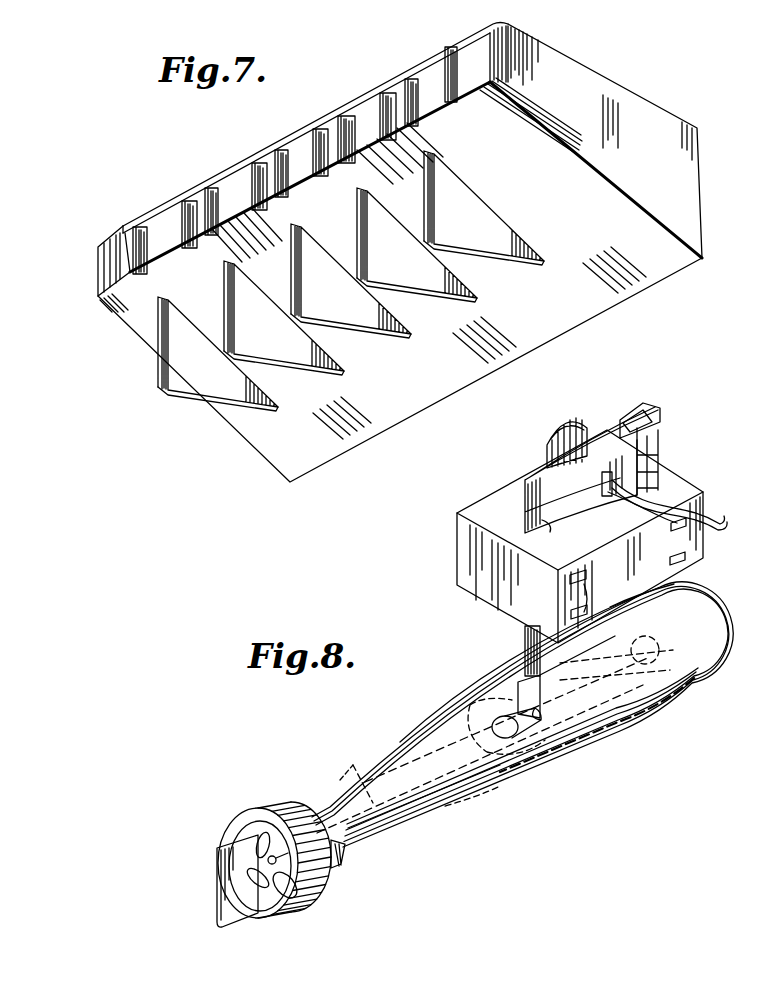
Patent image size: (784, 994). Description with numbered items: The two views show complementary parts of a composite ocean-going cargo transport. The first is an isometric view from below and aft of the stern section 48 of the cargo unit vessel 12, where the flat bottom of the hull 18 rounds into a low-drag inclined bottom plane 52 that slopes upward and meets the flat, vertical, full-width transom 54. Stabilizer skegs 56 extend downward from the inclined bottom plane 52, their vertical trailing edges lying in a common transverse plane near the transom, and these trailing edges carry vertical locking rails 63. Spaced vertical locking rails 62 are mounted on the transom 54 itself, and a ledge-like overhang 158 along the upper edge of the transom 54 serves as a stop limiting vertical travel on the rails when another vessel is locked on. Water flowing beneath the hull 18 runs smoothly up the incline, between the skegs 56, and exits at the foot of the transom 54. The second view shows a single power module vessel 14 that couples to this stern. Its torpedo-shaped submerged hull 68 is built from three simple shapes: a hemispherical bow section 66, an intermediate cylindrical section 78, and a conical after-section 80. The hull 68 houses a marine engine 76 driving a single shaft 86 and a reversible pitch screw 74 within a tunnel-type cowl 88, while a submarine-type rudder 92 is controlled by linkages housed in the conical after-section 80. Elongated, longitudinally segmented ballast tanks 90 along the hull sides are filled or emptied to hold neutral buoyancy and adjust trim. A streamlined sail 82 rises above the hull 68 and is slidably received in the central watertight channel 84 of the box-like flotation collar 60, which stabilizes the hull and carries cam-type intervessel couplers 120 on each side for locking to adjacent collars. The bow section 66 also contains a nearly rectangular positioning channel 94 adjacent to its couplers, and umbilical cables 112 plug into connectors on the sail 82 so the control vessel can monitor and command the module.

In FIG. 7, the cargo unit vessel 12 is at (647, 75).
In FIG. 7, the hull 18 is at (700, 157).
In FIG. 7, the stern section 48 is at (238, 452).
In FIG. 7, the inclined bottom plane 52 is at (615, 210).
In FIG. 7, the transom 54 is at (118, 250).
In FIG. 7, the stabilizer skegs 56 is at (312, 393).
In FIG. 7, the locking rails 62 is at (212, 192).
In FIG. 7, the locking rails 63 is at (165, 338).
In FIG. 7, the ledge-like overhang 158 is at (292, 140).
In FIG. 8, the power module vessel 14 is at (441, 612).
In FIG. 8, the flotation collar 60 is at (460, 562).
In FIG. 8, the hemispherical bow section 66 is at (712, 636).
In FIG. 8, the submerged hull 68 is at (497, 680).
In FIG. 8, the screw 74 is at (300, 892).
In FIG. 8, the engine 76 is at (598, 764).
In FIG. 8, the intermediate cylindrical section 78 is at (622, 725).
In FIG. 8, the conical after-section 80 is at (476, 784).
In FIG. 8, the sail 82 is at (525, 493).
In FIG. 8, the central watertight channel 84 is at (550, 532).
In FIG. 8, the shaft 86 is at (353, 768).
In FIG. 8, the tunnel-type cowl 88 is at (256, 812).
In FIG. 8, the ballast tanks 90 is at (443, 714).
In FIG. 8, the rudder 92 is at (212, 858).
In FIG. 8, the positioning channel 94 is at (688, 605).
In FIG. 8, the umbilical cables 112 is at (724, 520).
In FIG. 8, the cam-type intervessel couplers 120 is at (587, 581).